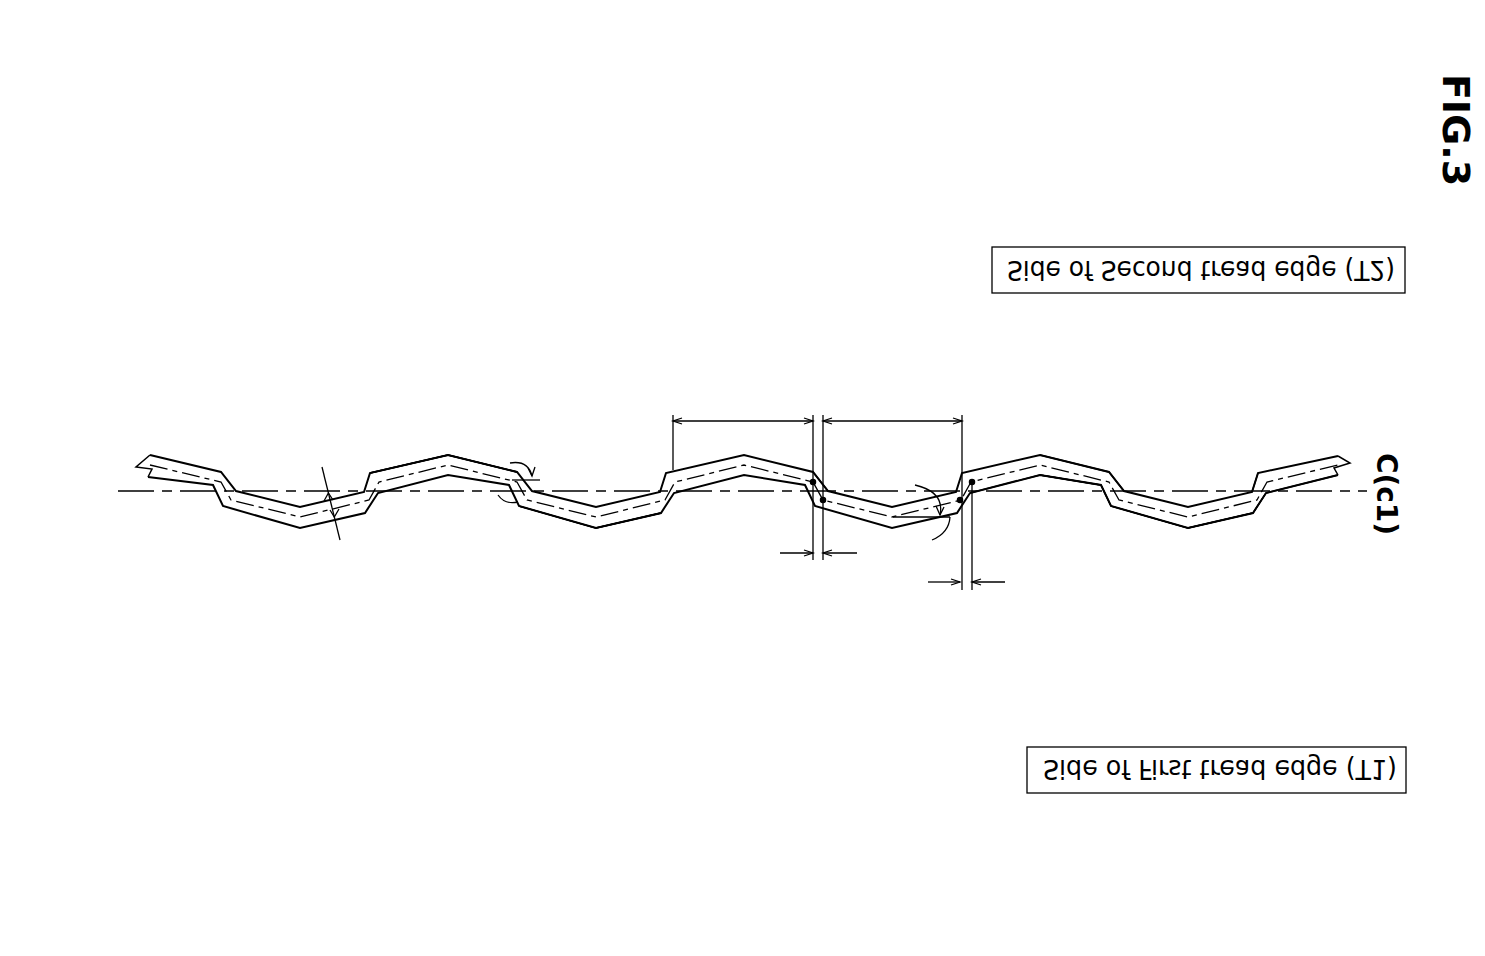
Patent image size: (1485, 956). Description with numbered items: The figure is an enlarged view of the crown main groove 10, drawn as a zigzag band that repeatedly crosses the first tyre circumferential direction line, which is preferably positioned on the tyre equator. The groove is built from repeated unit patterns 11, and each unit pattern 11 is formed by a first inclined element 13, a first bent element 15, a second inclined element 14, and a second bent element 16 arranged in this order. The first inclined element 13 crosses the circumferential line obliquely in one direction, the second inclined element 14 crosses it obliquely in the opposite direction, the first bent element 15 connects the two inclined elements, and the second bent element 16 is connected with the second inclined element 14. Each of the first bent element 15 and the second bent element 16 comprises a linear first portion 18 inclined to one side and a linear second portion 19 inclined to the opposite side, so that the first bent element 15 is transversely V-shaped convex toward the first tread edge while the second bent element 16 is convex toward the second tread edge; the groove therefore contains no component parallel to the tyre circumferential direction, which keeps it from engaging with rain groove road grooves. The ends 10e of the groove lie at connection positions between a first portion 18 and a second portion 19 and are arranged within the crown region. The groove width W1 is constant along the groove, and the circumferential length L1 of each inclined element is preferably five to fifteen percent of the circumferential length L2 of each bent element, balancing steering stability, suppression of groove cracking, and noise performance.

The crown main groove 10 is at (195, 475).
The ends of the crown main groove 10e is at (893, 527).
The unit pattern 11 is at (1032, 612).
The first inclined element 13 is at (1268, 502).
The second inclined element 14 is at (1112, 493).
The first bent element 15 is at (538, 617).
The second bent element 16 is at (392, 360).
The first portion 18 is at (482, 468).
The second portion 19 is at (412, 462).
The groove width W1 is at (318, 527).
The length in the tyre circumferential direction of the inclined elements L1 is at (892, 555).
The length in the tyre circumferential direction of the bent elements L2 is at (817, 484).